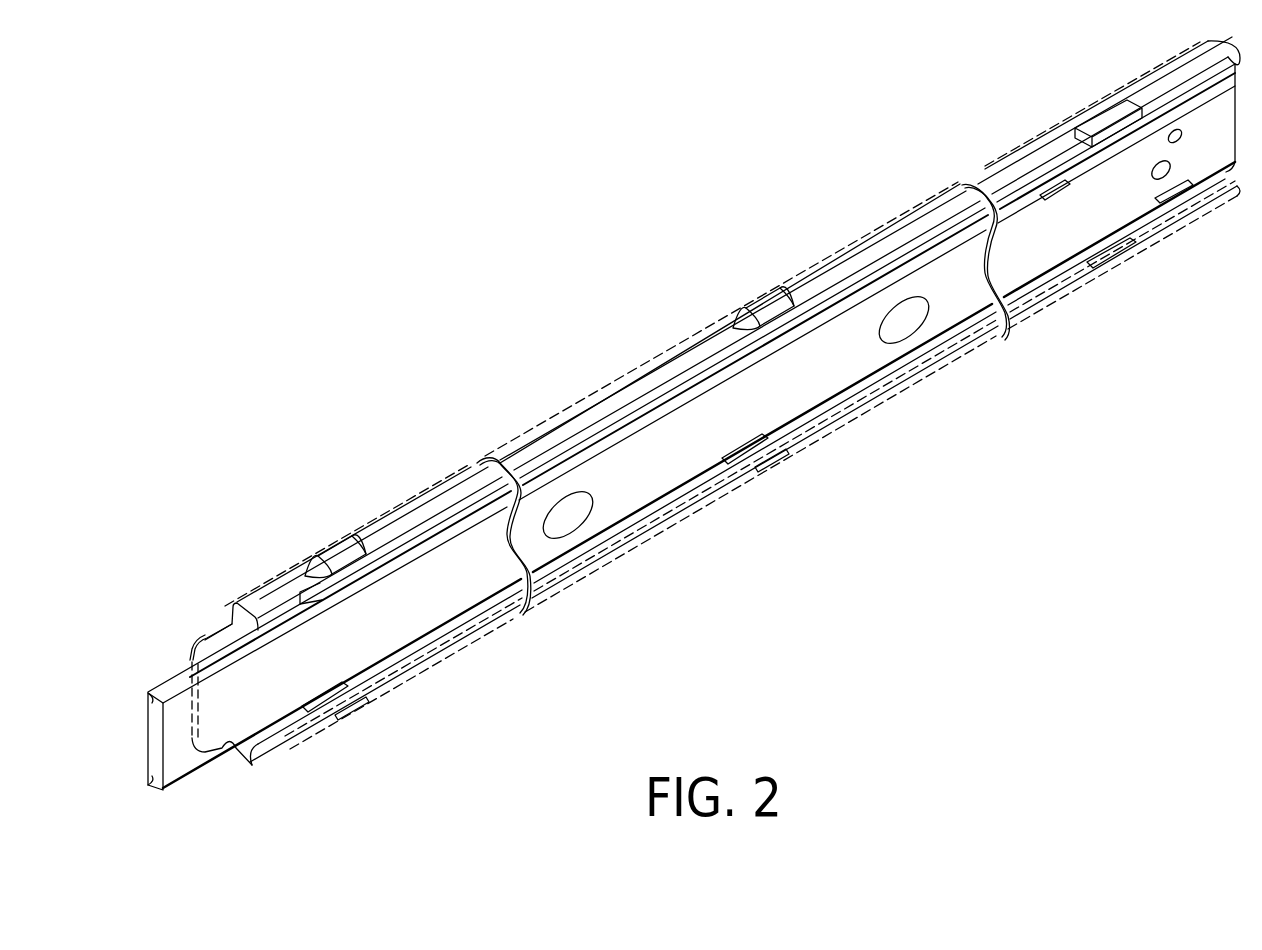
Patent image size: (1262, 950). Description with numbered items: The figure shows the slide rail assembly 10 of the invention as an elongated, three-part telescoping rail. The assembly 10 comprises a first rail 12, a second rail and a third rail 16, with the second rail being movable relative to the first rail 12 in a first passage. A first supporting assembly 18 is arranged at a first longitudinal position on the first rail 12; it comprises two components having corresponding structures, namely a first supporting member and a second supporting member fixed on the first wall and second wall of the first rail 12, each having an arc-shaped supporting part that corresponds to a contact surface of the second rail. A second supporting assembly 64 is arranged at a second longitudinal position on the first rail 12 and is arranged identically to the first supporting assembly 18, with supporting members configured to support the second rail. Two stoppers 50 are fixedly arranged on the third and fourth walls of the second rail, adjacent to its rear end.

The slide rail assembly 10 is at (896, 126).
The first rail 12 is at (243, 596).
The third rail 16 is at (187, 776).
The first supporting assembly 18 is at (757, 289).
The stopper 50 is at (1108, 94).
The second supporting assembly 64 is at (331, 540).